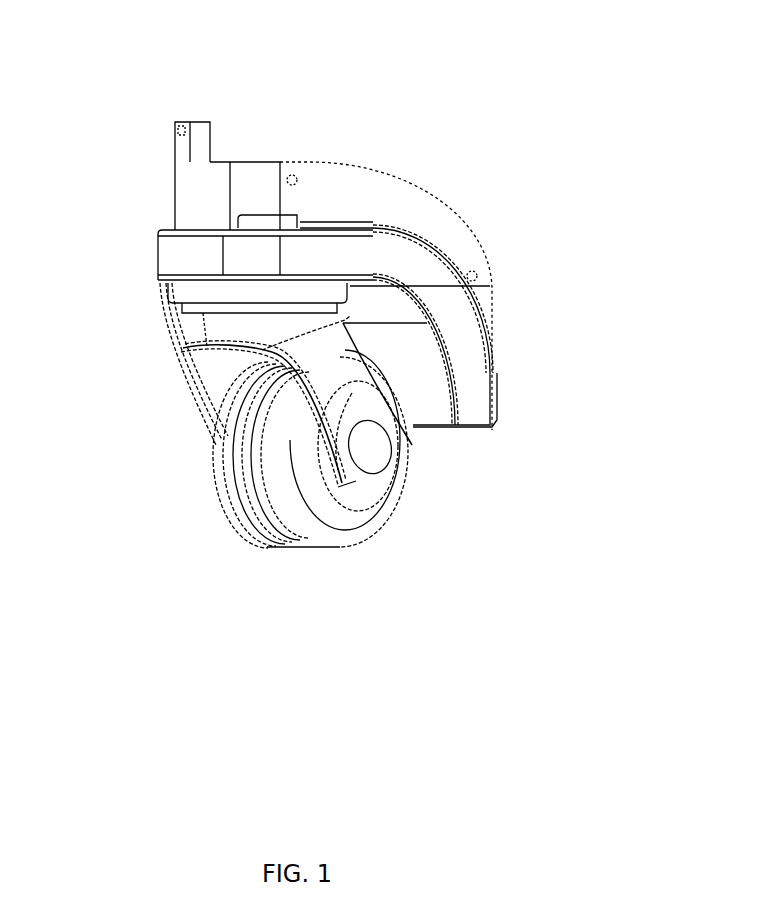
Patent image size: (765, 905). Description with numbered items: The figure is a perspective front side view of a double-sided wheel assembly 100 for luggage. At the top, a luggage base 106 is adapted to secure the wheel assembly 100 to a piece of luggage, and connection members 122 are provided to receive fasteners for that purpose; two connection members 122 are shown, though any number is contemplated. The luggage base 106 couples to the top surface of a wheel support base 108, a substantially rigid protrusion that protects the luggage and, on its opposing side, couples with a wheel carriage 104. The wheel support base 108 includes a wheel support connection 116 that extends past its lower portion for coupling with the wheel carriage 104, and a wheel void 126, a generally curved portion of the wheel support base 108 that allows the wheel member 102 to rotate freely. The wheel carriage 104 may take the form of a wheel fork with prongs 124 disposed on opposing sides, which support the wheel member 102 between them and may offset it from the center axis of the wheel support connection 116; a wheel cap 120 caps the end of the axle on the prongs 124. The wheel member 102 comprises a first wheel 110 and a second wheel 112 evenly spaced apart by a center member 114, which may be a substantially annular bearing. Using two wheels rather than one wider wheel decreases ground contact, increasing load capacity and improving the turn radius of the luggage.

The double-sided wheel assembly 100 is at (104, 75).
The wheel member 102 is at (175, 466).
The wheel carriage 104 is at (185, 334).
The luggage base 106 is at (203, 186).
The wheel support base 108 is at (393, 265).
The first wheel 110 is at (237, 510).
The second wheel 112 is at (308, 525).
The center member 114 is at (260, 525).
The wheel support connection 116 is at (180, 289).
The wheel cap 120 is at (370, 453).
The connection member 122 is at (294, 177).
The prong 124 is at (215, 390).
The wheel void 126 is at (400, 345).